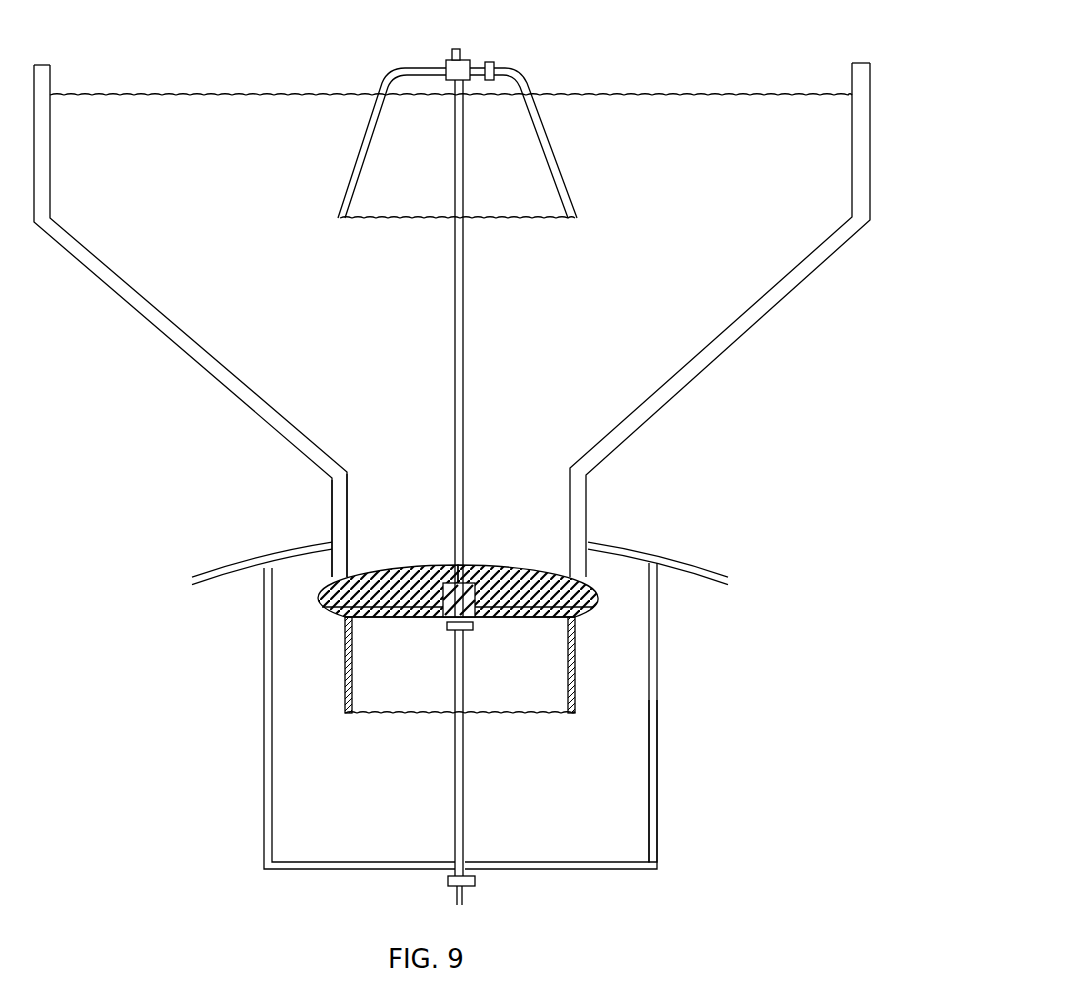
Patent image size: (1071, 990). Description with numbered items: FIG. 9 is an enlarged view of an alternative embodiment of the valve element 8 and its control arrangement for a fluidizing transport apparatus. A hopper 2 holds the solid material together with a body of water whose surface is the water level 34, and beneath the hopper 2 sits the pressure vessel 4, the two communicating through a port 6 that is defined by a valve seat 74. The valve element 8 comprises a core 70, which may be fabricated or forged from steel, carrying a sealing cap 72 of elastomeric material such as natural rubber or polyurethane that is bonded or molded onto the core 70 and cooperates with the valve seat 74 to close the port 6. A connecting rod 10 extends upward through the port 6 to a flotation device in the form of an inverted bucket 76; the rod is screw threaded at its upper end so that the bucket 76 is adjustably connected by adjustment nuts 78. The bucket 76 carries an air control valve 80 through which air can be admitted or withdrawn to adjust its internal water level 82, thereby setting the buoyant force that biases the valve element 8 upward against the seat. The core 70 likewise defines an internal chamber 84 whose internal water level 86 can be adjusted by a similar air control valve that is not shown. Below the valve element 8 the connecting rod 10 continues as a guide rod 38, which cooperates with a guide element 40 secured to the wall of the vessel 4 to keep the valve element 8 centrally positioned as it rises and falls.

The hopper 2 is at (189, 357).
The pressure vessel 4 is at (696, 566).
The port 6 is at (372, 498).
The valve element 8 is at (322, 669).
The connecting rod 10 is at (466, 316).
The water level 34 is at (165, 93).
The guide rod 38 is at (466, 798).
The guide element 40 is at (658, 846).
The core 70 is at (345, 703).
The sealing cap 72 is at (600, 605).
The valve seat 74 is at (321, 606).
The inverted bucket 76 is at (572, 172).
The adjustment nuts 78 is at (447, 62).
The air control valve 80 is at (496, 64).
The internal water level 82 is at (512, 216).
The internal chamber 84 is at (418, 675).
The internal water level 86 is at (512, 711).